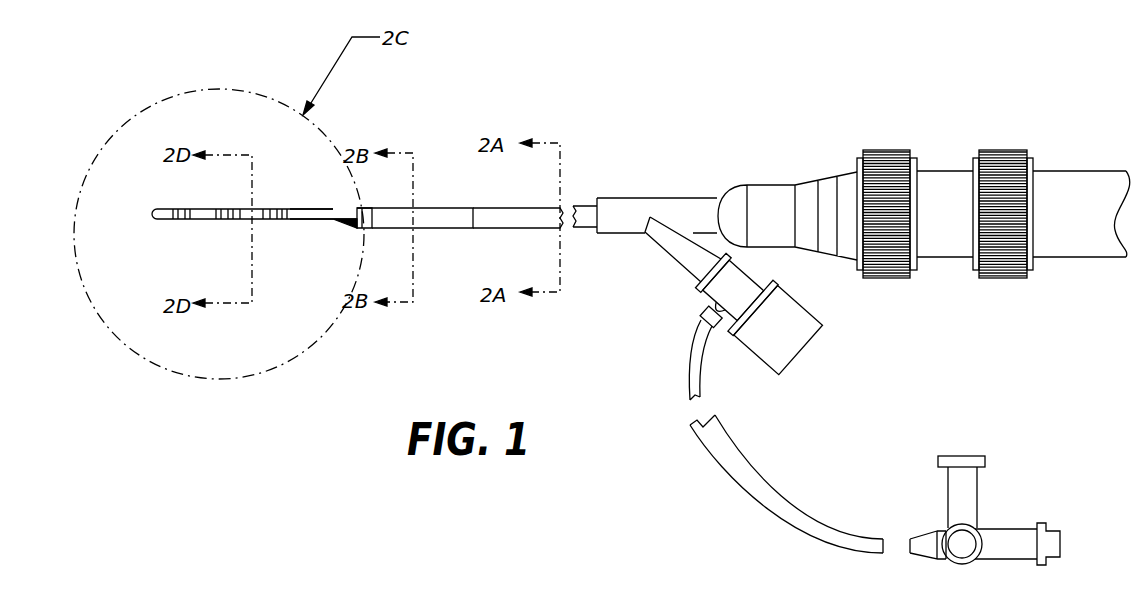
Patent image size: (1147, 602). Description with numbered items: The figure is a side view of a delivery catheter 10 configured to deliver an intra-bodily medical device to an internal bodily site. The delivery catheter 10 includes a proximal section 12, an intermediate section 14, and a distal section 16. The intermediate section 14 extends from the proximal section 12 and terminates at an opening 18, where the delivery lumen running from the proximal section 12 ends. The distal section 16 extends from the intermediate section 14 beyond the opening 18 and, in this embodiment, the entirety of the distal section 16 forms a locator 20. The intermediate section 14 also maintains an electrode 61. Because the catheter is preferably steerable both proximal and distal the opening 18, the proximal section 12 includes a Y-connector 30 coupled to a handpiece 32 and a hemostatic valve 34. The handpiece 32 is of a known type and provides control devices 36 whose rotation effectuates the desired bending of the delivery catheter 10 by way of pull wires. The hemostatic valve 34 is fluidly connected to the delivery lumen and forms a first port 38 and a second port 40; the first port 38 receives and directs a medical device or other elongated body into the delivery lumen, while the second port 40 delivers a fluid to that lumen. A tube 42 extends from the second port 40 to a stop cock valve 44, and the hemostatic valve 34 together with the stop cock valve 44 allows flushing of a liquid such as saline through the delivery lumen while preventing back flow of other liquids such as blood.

The delivery catheter 10 is at (602, 100).
The proximal section 12 is at (515, 228).
The intermediate section 14 is at (423, 228).
The distal section 16 is at (313, 209).
The opening 18 is at (345, 224).
The locator 20 is at (207, 228).
The Y-connector 30 is at (617, 200).
The handpiece 32 is at (780, 172).
The hemostatic valve 34 is at (775, 318).
The control devices 36 is at (1010, 150).
The first port 38 is at (789, 364).
The second port 40 is at (703, 316).
The tube 42 is at (722, 458).
The stop cock valve 44 is at (965, 497).
The electrode 61 is at (364, 208).